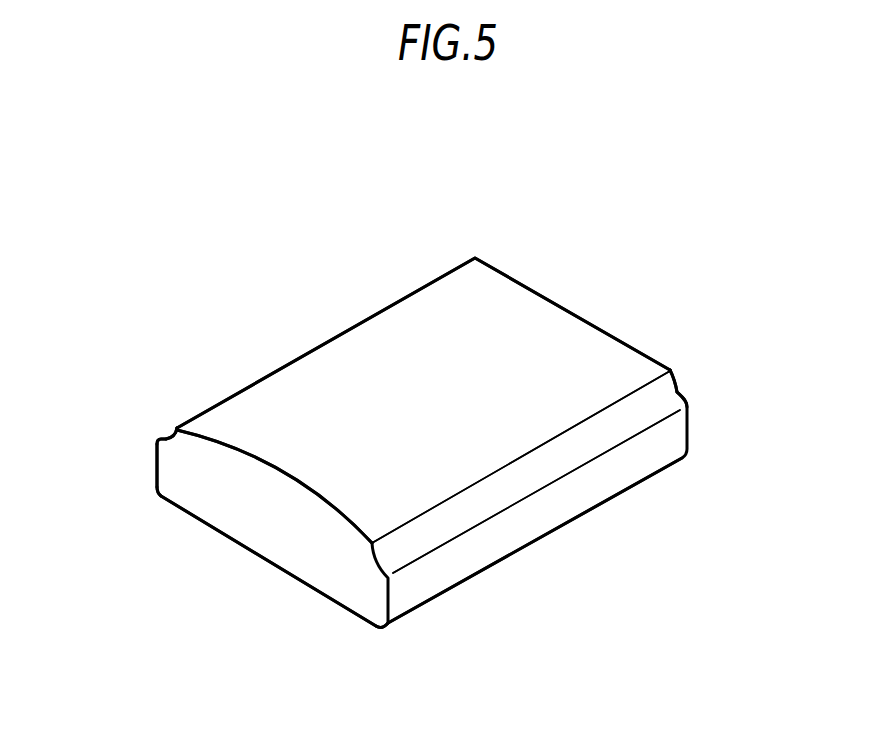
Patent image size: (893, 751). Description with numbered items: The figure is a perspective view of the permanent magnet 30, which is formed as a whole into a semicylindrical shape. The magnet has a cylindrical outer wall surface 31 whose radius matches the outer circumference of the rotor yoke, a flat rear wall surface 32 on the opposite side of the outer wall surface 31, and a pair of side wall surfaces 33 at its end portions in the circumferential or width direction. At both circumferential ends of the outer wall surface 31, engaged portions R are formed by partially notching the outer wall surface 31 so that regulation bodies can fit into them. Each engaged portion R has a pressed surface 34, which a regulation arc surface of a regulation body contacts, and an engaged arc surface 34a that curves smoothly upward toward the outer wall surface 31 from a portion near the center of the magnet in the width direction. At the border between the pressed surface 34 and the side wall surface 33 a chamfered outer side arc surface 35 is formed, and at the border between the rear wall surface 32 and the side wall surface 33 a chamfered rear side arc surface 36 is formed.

The permanent magnet 30 is at (248, 528).
The cylindrical outer wall surface 31 is at (525, 315).
The flat rear wall surface 32 is at (275, 570).
The side wall surface 33 is at (157, 473).
The pressed surface 34 is at (166, 436).
The engaged arc surface 34a is at (171, 432).
The outer side arc surface 35 is at (157, 440).
The rear side arc surface 36 is at (165, 503).